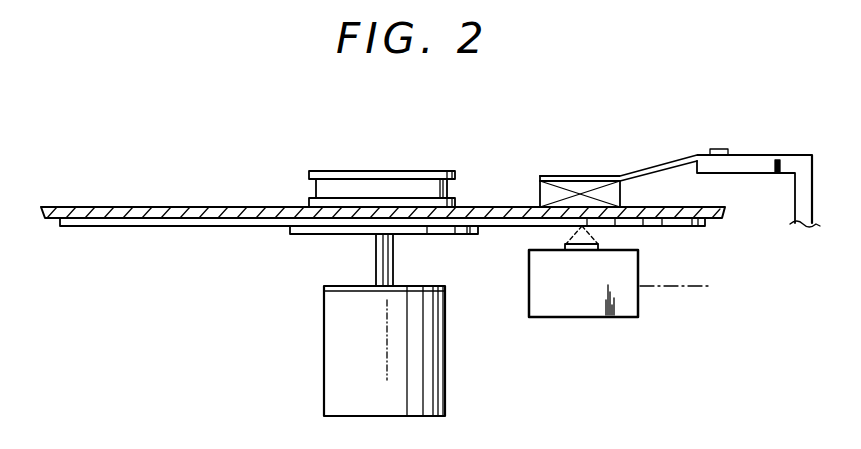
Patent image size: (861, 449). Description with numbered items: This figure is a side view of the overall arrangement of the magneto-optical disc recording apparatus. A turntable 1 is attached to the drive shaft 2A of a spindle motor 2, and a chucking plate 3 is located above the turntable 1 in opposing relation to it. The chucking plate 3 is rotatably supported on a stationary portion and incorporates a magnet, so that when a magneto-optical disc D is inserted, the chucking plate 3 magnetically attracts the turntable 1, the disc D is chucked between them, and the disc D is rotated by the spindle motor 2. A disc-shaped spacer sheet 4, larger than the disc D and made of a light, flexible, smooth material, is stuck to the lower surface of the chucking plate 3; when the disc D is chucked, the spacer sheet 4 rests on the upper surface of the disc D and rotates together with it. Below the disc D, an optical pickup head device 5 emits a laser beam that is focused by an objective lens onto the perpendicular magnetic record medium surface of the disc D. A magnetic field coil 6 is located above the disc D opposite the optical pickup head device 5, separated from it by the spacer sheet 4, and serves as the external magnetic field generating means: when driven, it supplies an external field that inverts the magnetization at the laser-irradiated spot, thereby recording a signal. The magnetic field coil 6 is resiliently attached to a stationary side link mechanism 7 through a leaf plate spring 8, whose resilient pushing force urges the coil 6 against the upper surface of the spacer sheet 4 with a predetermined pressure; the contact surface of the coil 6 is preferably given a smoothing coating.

The turntable 1 is at (303, 234).
The spindle motor 2 is at (328, 378).
The drive shaft 2A is at (393, 257).
The chucking plate 3 is at (396, 182).
The spacer sheet 4 is at (482, 206).
The optical pickup head device 5 is at (593, 315).
The magnetic field coil 6 is at (543, 192).
The stationary side link mechanism 7 is at (786, 165).
The leaf plate spring 8 is at (656, 165).
The magneto-optical disc D is at (672, 226).